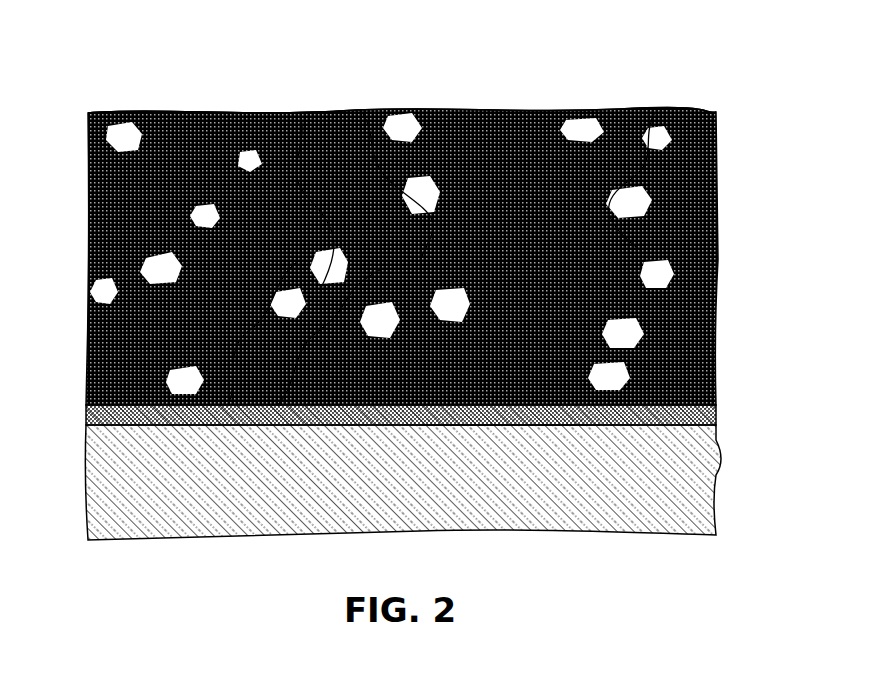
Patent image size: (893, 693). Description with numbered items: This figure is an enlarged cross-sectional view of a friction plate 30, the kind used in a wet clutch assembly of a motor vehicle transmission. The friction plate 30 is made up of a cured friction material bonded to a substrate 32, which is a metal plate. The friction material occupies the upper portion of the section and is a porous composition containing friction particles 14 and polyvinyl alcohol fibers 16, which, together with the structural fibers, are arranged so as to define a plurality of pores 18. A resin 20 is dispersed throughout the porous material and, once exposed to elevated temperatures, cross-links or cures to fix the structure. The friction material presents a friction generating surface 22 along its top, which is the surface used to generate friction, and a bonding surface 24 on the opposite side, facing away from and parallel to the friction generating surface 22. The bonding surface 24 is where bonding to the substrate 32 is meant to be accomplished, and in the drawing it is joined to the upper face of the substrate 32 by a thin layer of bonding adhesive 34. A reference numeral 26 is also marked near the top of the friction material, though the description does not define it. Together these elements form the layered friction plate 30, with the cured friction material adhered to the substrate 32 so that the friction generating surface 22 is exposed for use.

The friction particles 14 is at (90, 342).
The polyvinyl alcohol fibers 16 is at (655, 112).
The pores 18 is at (640, 300).
The resin 20 is at (362, 112).
The friction generating surface 22 is at (505, 104).
The bonding surface 24 is at (716, 430).
The composite layer 26 is at (165, 112).
The friction plate 30 is at (229, 78).
The substrate 32 is at (585, 490).
The bonding adhesive 34 is at (503, 425).